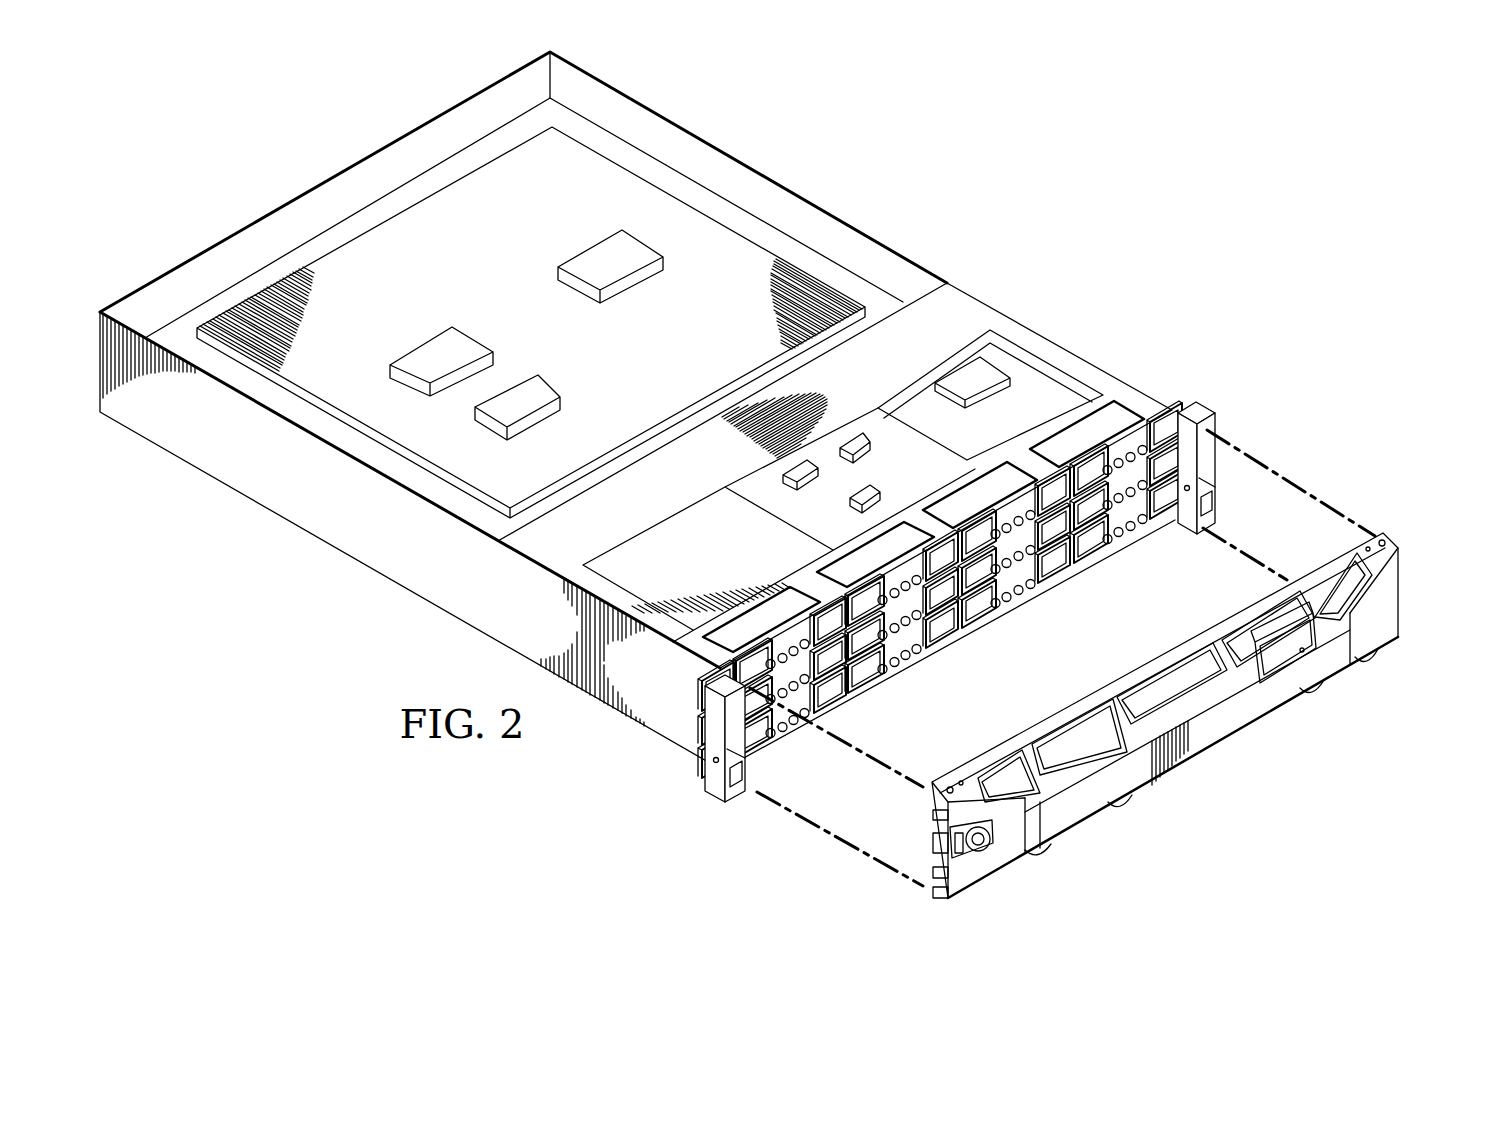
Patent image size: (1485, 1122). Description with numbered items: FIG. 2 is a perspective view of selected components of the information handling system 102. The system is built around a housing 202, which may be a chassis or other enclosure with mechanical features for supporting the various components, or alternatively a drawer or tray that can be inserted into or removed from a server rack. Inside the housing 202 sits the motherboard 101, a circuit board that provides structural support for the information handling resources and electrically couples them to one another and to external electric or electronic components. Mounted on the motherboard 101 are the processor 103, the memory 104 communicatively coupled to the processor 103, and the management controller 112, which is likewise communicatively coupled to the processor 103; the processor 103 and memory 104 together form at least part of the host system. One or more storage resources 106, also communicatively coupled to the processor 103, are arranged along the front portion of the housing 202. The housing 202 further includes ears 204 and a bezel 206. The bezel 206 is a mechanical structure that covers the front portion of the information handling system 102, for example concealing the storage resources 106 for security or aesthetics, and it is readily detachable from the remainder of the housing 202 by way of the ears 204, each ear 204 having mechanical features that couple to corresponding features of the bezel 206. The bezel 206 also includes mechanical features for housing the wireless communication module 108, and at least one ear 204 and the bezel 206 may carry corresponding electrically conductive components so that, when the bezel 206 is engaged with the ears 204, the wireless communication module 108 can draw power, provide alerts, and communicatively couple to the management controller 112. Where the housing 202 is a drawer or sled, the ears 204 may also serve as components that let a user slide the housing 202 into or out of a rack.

The motherboard 101 is at (625, 192).
The information handling system 102 is at (984, 161).
The processor 103 is at (425, 350).
The memory 104 is at (538, 390).
The storage resources 106 is at (1123, 557).
The wireless communication module 108 is at (1260, 630).
The management controller 112 is at (593, 253).
The housing 202 is at (747, 167).
The ears 204 is at (1193, 410).
The bezel 206 is at (1392, 592).